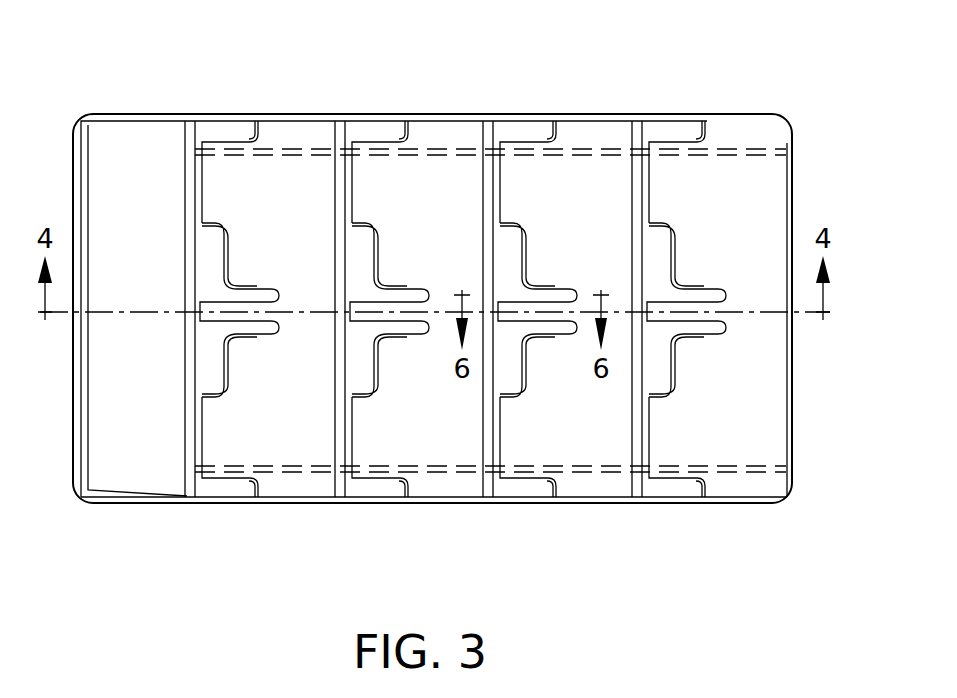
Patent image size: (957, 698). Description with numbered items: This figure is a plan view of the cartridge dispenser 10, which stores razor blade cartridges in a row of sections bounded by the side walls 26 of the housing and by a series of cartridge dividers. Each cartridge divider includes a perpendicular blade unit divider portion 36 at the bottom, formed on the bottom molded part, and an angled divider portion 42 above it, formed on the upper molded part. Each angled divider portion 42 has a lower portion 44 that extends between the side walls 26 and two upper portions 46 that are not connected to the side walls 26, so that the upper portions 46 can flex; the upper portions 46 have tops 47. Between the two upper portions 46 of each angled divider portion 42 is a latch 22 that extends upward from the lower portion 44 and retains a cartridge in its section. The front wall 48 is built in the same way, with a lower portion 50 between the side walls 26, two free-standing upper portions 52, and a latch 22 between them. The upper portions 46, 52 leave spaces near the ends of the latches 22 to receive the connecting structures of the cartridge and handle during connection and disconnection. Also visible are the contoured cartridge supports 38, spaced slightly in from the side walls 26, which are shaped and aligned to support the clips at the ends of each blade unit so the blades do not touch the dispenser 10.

The cartridge dispenser 10 is at (588, 72).
The latch 22 is at (187, 309).
The side wall 26 is at (180, 114).
The perpendicular blade unit divider portion 36 is at (194, 360).
The contoured cartridge support 38 is at (250, 158).
The angled divider portion 42 is at (283, 483).
The lower portion 44 is at (444, 136).
The upper portion 46 is at (372, 163).
The top 47 is at (202, 192).
The front wall 48 is at (755, 452).
The lower portion 50 is at (730, 153).
The upper portion 52 is at (670, 166).